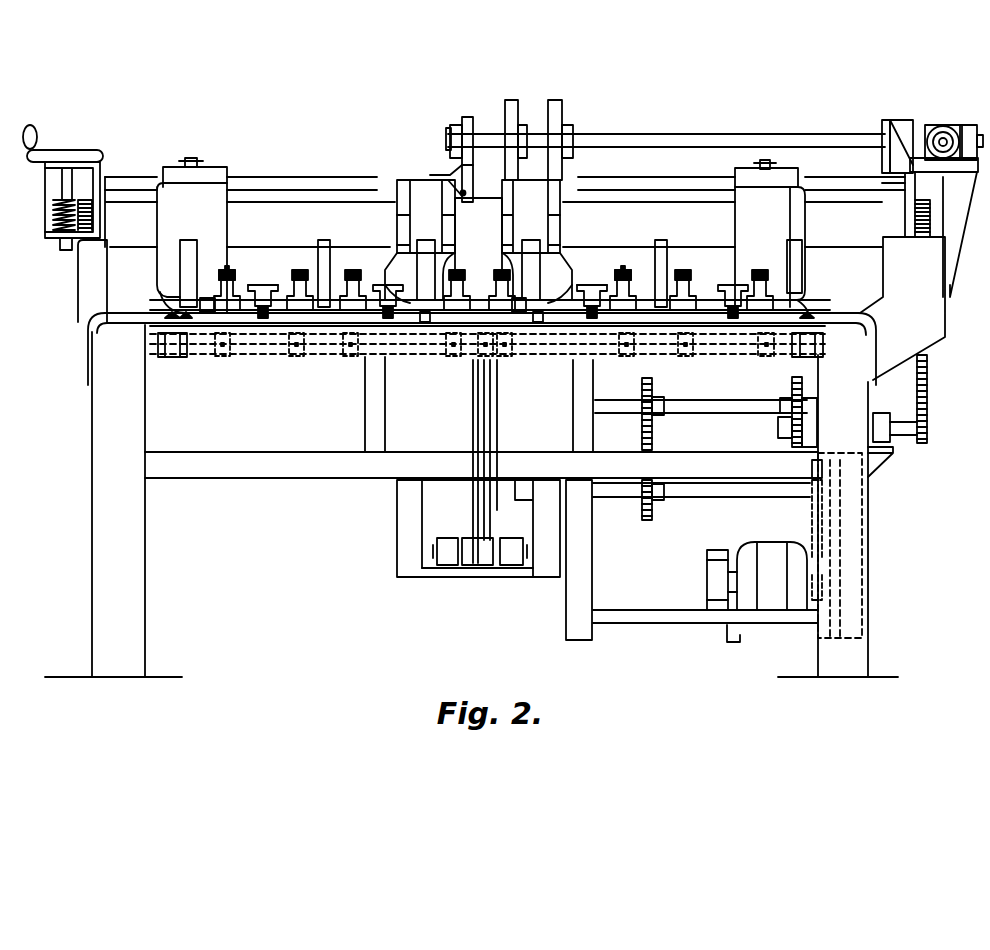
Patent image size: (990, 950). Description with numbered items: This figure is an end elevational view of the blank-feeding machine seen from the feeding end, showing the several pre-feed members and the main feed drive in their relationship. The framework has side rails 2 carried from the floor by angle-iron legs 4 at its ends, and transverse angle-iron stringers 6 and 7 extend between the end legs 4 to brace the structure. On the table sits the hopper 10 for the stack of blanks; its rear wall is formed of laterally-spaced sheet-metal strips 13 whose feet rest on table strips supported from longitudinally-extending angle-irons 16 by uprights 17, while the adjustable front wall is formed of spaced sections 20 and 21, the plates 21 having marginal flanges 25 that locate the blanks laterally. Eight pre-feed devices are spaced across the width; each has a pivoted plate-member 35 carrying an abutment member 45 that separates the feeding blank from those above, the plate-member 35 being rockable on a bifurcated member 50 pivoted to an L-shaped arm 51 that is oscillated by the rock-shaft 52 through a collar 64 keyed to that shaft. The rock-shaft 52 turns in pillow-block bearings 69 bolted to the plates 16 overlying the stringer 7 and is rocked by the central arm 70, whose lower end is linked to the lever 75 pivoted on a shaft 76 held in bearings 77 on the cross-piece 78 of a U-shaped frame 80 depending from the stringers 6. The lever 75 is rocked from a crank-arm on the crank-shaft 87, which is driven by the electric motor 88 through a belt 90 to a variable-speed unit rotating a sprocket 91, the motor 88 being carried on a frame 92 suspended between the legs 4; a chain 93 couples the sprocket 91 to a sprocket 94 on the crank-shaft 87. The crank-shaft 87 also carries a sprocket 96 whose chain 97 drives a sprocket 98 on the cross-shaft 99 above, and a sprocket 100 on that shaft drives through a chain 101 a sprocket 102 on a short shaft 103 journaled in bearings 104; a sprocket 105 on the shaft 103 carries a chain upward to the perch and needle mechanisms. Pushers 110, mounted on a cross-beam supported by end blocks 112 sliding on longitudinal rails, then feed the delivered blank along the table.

The side rail 2 is at (88, 347).
The angle-iron leg 4 is at (135, 577).
The transverse angle-iron stringer 6 is at (322, 462).
The transverse angle-iron stringer 7 is at (313, 357).
The hopper 10 is at (368, 263).
The sheet-metal strip 13 is at (188, 247).
The longitudinally-extending angle-iron 16 is at (178, 318).
The upright 17 is at (187, 303).
The front wall section 20 is at (410, 222).
The front wall section plate 21 is at (217, 232).
The marginal flange 25 is at (163, 270).
The pivoted rest or plate-member 35 is at (233, 282).
The abutment member 45 is at (230, 270).
The rockable bifurcated member 50 is at (245, 285).
The L-shaped arm 51 is at (350, 290).
The rock-shaft 52 is at (268, 353).
The collar 64 is at (217, 356).
The pillow-block bearing 69 is at (160, 357).
The arm or lever 70 is at (493, 403).
The lever 75 is at (477, 412).
The shaft 76 is at (463, 550).
The bearing 77 is at (448, 543).
The cross-piece 78 is at (495, 572).
The U-shaped frame 80 is at (393, 538).
The crank-shaft 87 is at (755, 487).
The electric motor 88 is at (768, 548).
The belt 90 is at (712, 552).
The sprocket 91 is at (820, 595).
The frame 92 is at (563, 608).
The chain 93 is at (810, 532).
The sprocket 94 is at (813, 477).
The sprocket 96 is at (655, 502).
The chain 97 is at (642, 438).
The sprocket 98 is at (656, 414).
The cross-shaft 99 is at (732, 390).
The sprocket 100 is at (803, 398).
The chain 101 is at (792, 405).
The sprocket 102 is at (790, 435).
The short shaft 103 is at (898, 430).
The bearing 104 is at (812, 425).
The sprocket 105 is at (917, 447).
The pusher 110 is at (275, 284).
The end block 112 is at (207, 307).